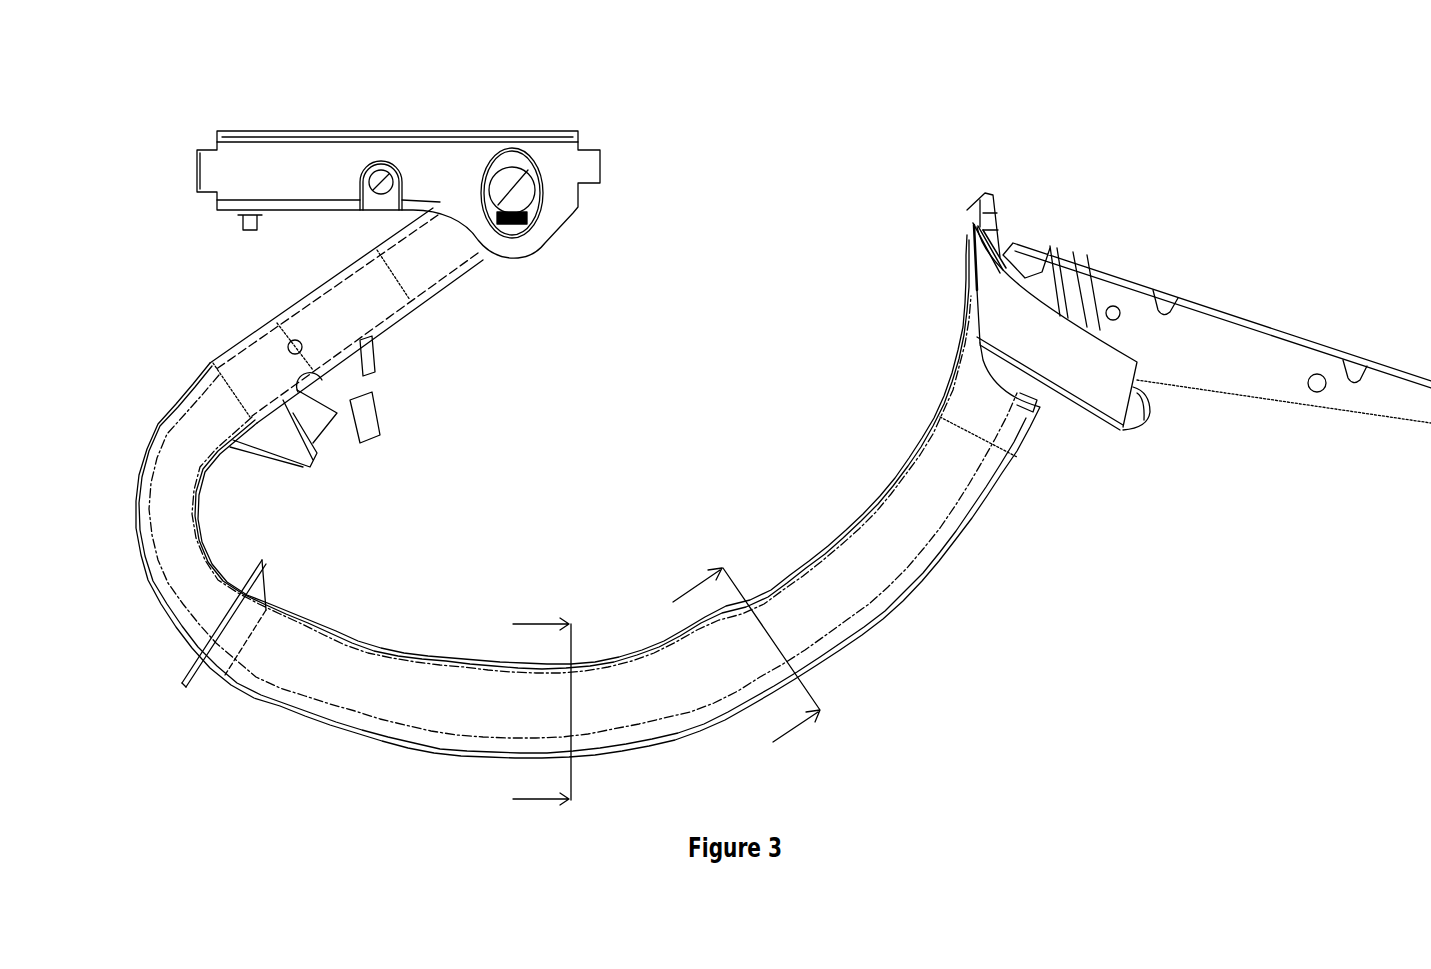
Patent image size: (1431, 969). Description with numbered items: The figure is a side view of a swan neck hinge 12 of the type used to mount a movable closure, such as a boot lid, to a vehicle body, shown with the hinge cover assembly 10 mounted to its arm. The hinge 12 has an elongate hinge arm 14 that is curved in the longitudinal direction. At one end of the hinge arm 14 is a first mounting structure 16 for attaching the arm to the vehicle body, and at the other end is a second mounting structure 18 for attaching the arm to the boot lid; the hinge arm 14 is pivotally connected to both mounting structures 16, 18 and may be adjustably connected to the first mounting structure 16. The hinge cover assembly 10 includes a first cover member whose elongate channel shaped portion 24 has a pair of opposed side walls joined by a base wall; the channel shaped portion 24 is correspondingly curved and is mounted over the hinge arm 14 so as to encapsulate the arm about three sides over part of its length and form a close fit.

The hinge cover assembly 10 is at (997, 695).
The swan neck hinge 12 is at (444, 149).
The hinge arm 14 is at (210, 405).
The first mounting structure 16 is at (330, 137).
The second mounting structure 18 is at (1195, 310).
The elongate channel shaped portion 24 is at (937, 490).